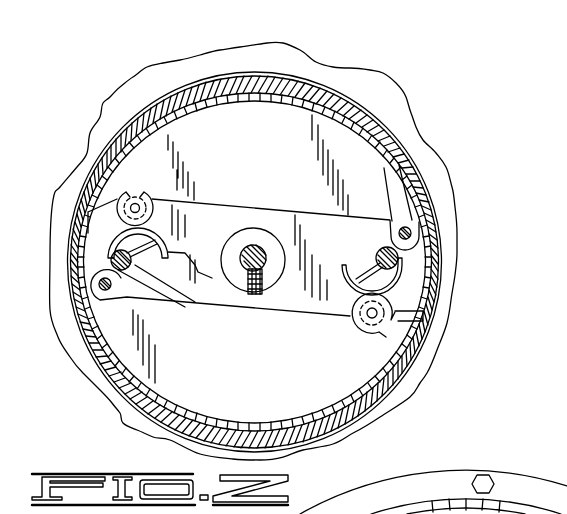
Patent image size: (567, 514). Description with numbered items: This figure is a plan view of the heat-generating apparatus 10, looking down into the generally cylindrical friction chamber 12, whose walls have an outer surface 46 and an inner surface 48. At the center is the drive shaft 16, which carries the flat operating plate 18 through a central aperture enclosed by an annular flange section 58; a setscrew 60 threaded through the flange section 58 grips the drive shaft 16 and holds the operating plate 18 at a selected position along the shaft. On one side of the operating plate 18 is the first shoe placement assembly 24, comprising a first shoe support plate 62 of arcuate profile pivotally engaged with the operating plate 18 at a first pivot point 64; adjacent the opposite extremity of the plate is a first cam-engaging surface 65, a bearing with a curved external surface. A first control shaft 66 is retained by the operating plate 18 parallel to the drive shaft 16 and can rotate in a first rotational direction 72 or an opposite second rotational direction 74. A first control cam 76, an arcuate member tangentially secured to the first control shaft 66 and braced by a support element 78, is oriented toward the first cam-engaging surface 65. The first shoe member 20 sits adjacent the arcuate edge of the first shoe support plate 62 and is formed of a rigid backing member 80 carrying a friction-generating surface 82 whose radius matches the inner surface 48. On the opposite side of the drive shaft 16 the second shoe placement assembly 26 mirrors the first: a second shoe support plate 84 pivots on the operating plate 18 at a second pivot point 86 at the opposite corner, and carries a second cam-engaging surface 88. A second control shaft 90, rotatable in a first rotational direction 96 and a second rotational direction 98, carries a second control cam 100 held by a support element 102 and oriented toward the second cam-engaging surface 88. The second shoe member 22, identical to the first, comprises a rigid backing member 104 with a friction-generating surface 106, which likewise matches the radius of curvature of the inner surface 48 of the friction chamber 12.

The heat-generating apparatus 10 is at (442, 62).
The friction chamber 12 is at (432, 194).
The drive shaft 16 is at (253, 245).
The operating plate 18 is at (228, 233).
The first shoe member 20 is at (203, 93).
The second shoe member 22 is at (360, 400).
The first shoe placement assembly 24 is at (143, 188).
The second shoe placement assembly 26 is at (380, 337).
The outer surface 46 is at (428, 328).
The inner surface 48 is at (430, 318).
The annular flange section 58 is at (273, 273).
The setscrew 60 is at (255, 296).
The first shoe support plate 62 is at (269, 161).
The first pivot point 64 is at (398, 225).
The first cam-engaging surface 65 is at (147, 228).
The first control shaft 66 is at (176, 306).
The first rotational direction 72 is at (100, 262).
The second rotational direction 74 is at (103, 223).
The first control cam 76 is at (171, 266).
The support element 78 is at (187, 301).
The rigid backing member 80 is at (288, 102).
The friction-generating surface 82 is at (302, 90).
The second shoe support plate 84 is at (220, 378).
The second pivot point 86 is at (118, 295).
The second cam-engaging surface 88 is at (358, 323).
The second control shaft 90 is at (396, 252).
The first rotational direction 96 is at (378, 243).
The second rotational direction 98 is at (355, 262).
The second control cam 100 is at (400, 262).
The support element 102 is at (405, 272).
The rigid backing member 104 is at (207, 414).
The friction-generating surface 106 is at (303, 457).